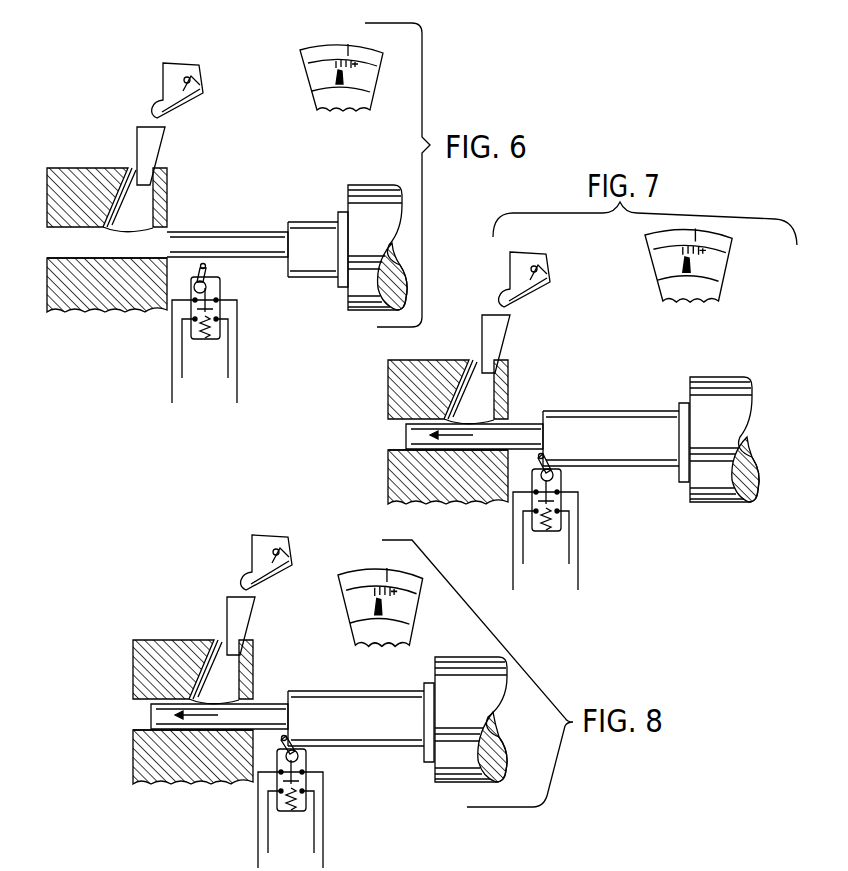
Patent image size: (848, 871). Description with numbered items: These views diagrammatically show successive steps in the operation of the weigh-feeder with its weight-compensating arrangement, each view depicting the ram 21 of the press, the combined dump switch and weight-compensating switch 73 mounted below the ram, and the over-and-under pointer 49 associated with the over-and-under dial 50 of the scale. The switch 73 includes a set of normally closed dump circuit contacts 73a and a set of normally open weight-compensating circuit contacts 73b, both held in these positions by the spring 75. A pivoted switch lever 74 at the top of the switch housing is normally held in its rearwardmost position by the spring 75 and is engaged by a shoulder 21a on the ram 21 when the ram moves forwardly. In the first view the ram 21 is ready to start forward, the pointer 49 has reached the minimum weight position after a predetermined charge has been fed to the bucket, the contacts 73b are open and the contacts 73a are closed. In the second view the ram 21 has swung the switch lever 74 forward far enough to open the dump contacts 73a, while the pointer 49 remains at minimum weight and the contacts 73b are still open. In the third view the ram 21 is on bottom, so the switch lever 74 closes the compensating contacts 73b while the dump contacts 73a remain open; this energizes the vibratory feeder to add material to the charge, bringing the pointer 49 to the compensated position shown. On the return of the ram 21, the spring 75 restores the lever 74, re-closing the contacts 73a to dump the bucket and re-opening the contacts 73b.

In FIG. 6, the ram 21 is at (315, 229).
In FIG. 7, the ram 21 is at (547, 421).
In FIG. 8, the ram 21 is at (292, 713).
In FIG. 6, the shoulder 21a is at (291, 270).
In FIG. 7, the shoulder 21a is at (566, 427).
In FIG. 8, the shoulder 21a is at (295, 708).
In FIG. 6, the over-and-under pointer 49 is at (338, 78).
In FIG. 7, the over-and-under pointer 49 is at (651, 269).
In FIG. 8, the over-and-under pointer 49 is at (342, 608).
In FIG. 6, the over-and-under dial 50 is at (330, 60).
In FIG. 7, the over-and-under dial 50 is at (672, 262).
In FIG. 8, the over-and-under dial 50 is at (378, 594).
In FIG. 6, the combined dump switch and weight-compensating switch 73 is at (203, 340).
In FIG. 7, the combined dump switch and weight-compensating switch 73 is at (555, 529).
In FIG. 8, the combined dump switch and weight-compensating switch 73 is at (299, 808).
In FIG. 6, the dump circuit contacts 73a is at (212, 291).
In FIG. 7, the dump circuit contacts 73a is at (581, 492).
In FIG. 8, the dump circuit contacts 73a is at (326, 779).
In FIG. 6, the weight-compensating circuit contacts 73b is at (222, 327).
In FIG. 7, the weight-compensating circuit contacts 73b is at (581, 518).
In FIG. 8, the weight-compensating circuit contacts 73b is at (326, 803).
In FIG. 6, the switch lever 74 is at (207, 284).
In FIG. 7, the switch lever 74 is at (570, 471).
In FIG. 8, the switch lever 74 is at (318, 753).
In FIG. 6, the spring 75 is at (192, 322).
In FIG. 7, the spring 75 is at (516, 517).
In FIG. 8, the spring 75 is at (260, 804).